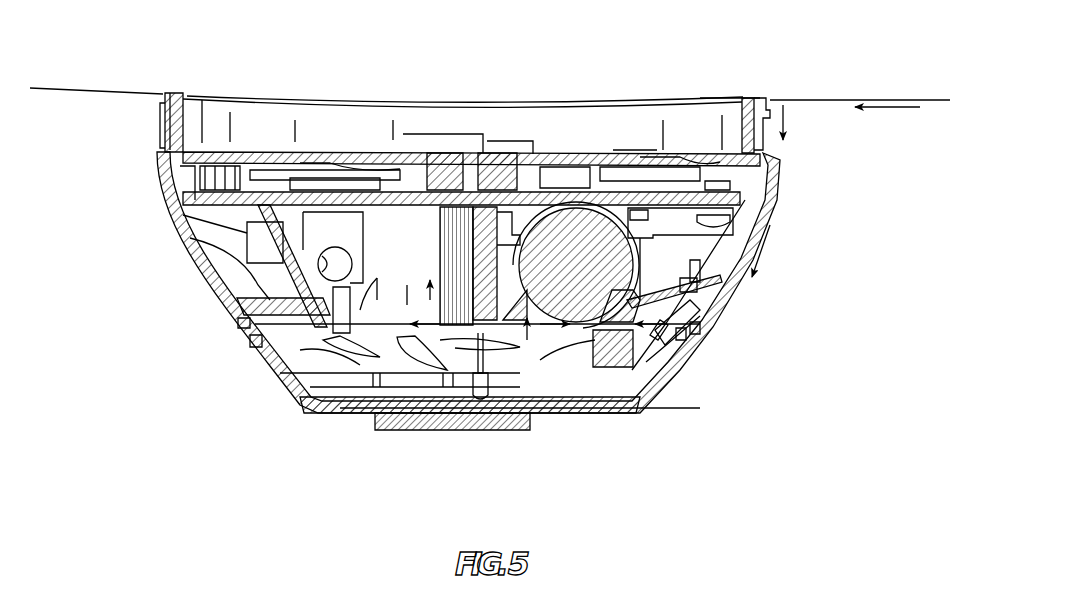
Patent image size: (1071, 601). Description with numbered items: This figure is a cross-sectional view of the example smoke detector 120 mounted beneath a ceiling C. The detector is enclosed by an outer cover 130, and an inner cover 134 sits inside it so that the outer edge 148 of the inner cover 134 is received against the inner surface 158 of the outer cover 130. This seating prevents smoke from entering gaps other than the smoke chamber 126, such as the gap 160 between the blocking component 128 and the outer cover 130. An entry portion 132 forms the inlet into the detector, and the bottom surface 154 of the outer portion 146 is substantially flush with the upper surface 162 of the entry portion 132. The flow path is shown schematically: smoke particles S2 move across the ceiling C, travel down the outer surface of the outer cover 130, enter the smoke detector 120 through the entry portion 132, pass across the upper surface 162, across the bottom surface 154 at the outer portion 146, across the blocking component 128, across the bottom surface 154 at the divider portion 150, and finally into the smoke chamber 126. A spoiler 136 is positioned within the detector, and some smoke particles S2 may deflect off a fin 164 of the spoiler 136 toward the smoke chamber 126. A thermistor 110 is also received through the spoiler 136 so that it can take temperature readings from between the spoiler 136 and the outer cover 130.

The thermistor 110 is at (488, 388).
The smoke detector 120 is at (120, 140).
The smoke chamber 126 is at (345, 322).
The blocking component 128 is at (575, 245).
The outer cover 130 is at (767, 197).
The entry portion 132 is at (260, 383).
The inner cover 134 is at (677, 310).
The spoiler 136 is at (352, 363).
The outer portion 146 is at (190, 252).
The outer edge 148 is at (690, 328).
The divider portion 150 is at (533, 337).
The bottom surface 154 is at (330, 275).
The inner surface 158 is at (718, 268).
The gap 160 is at (682, 270).
The upper surface 162 is at (243, 322).
The fin 164 is at (408, 300).
The ceiling C is at (835, 100).
The smoke particles S2 is at (883, 106).